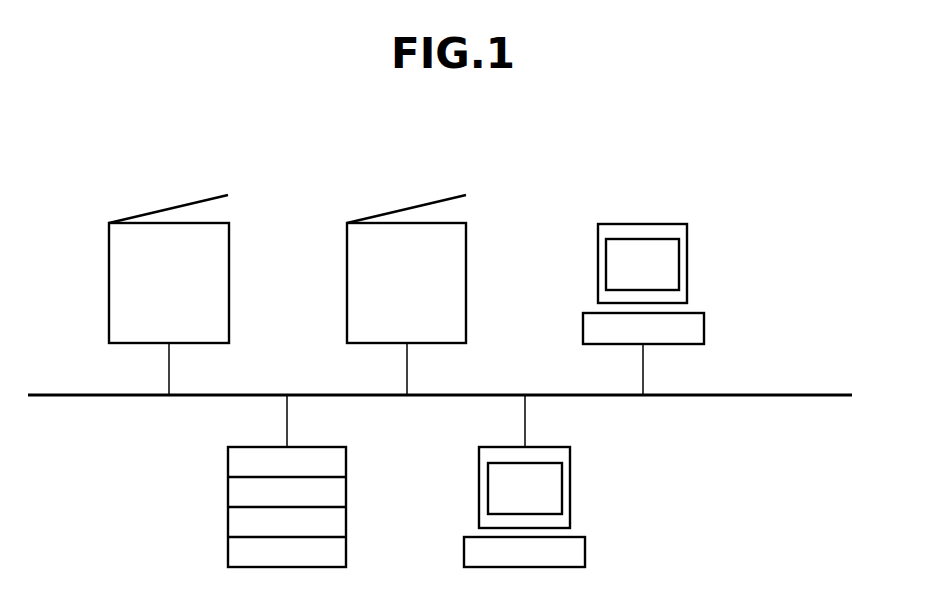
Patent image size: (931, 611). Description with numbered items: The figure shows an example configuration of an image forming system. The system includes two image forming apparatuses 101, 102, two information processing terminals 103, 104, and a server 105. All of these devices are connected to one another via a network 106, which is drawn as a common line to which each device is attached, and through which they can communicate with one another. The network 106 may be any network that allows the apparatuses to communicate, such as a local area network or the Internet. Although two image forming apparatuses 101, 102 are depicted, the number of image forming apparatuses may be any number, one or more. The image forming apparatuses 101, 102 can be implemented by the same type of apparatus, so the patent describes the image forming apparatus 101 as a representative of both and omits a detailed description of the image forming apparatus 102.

The image forming apparatus 101 is at (230, 282).
The image forming apparatus 102 is at (467, 283).
The information processing terminal 103 is at (688, 258).
The information processing terminal 104 is at (586, 550).
The server 105 is at (347, 551).
The network 106 is at (781, 392).